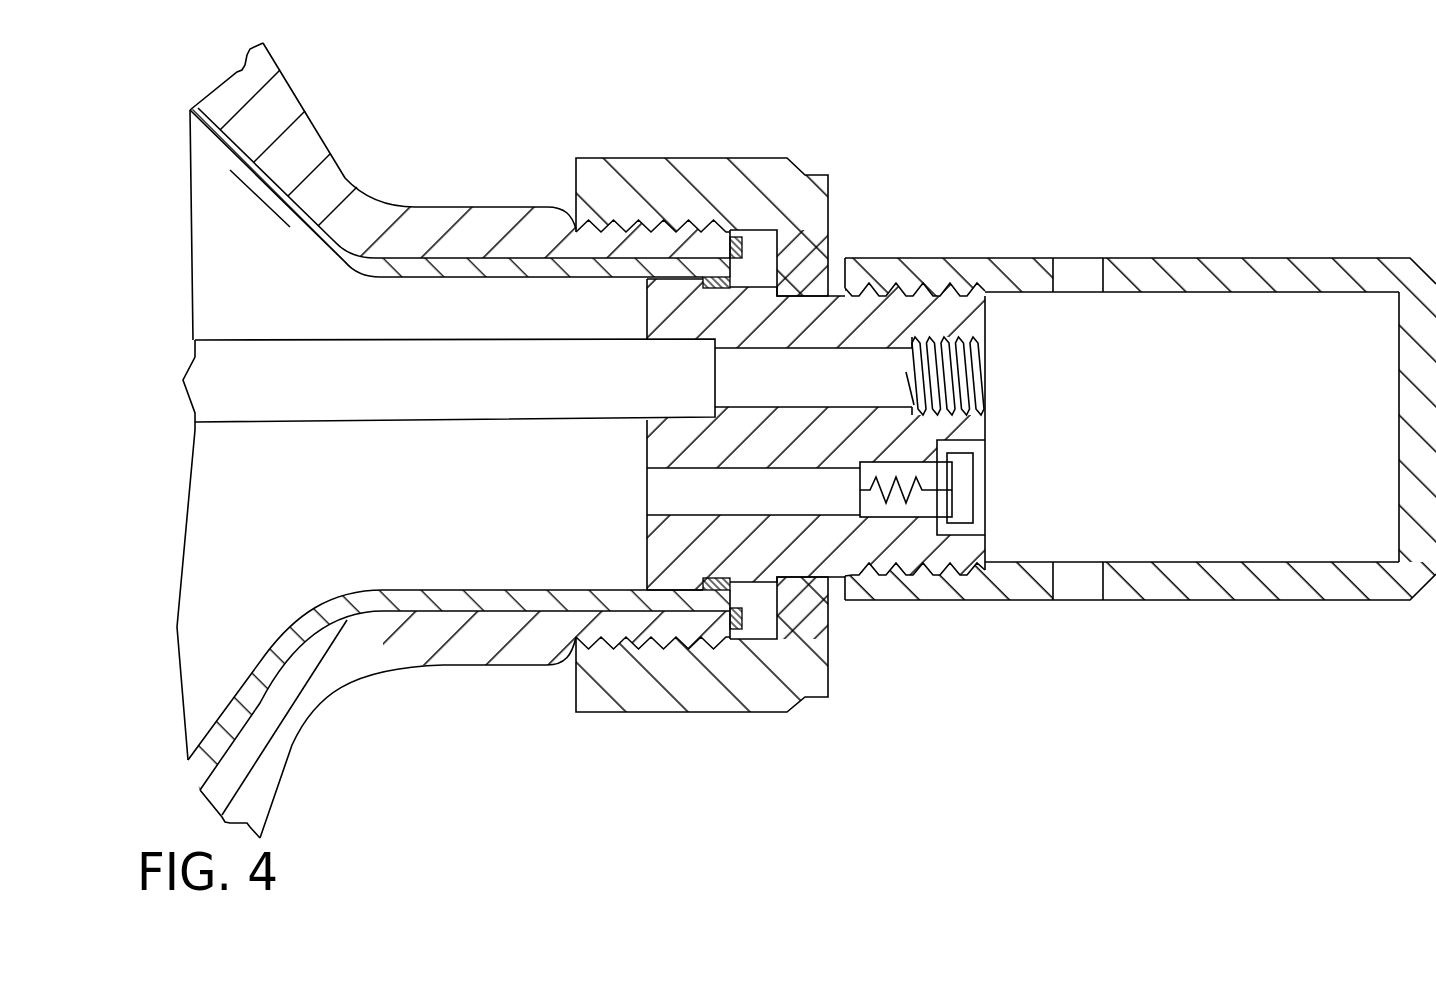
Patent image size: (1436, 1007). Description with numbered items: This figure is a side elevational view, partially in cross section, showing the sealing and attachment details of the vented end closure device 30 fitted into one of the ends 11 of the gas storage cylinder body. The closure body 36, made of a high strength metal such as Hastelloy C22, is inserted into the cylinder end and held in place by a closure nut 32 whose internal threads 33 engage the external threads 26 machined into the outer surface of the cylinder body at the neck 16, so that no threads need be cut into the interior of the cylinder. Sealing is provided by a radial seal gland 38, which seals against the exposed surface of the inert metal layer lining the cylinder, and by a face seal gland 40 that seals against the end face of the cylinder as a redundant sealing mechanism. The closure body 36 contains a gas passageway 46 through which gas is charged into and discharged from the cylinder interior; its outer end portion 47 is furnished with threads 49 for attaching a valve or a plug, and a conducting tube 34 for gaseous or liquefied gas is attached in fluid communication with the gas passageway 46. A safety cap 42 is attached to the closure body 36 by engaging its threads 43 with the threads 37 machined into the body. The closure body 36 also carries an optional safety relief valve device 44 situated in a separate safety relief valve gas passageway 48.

The ends of the cylinder body 11 is at (453, 440).
The neck 16 is at (467, 667).
The external threads 26 is at (604, 238).
The vented end closure device 30 is at (1012, 228).
The closure nut 32 is at (659, 418).
The internal threads 33 is at (617, 198).
The conducting tube 34 is at (288, 340).
The closure body 36 is at (829, 435).
The threads 37 is at (988, 298).
The radial seal gland 38 is at (732, 285).
The face seal gland 40 is at (742, 250).
The safety cap 42 is at (1140, 381).
The threads 43 is at (932, 286).
The safety relief valve device 44 is at (1012, 493).
The gas passageway 46 is at (910, 384).
The outer end portion of the gas passageway 47 is at (988, 393).
The safety relief valve gas passageway 48 is at (810, 502).
The threads 49 is at (988, 335).